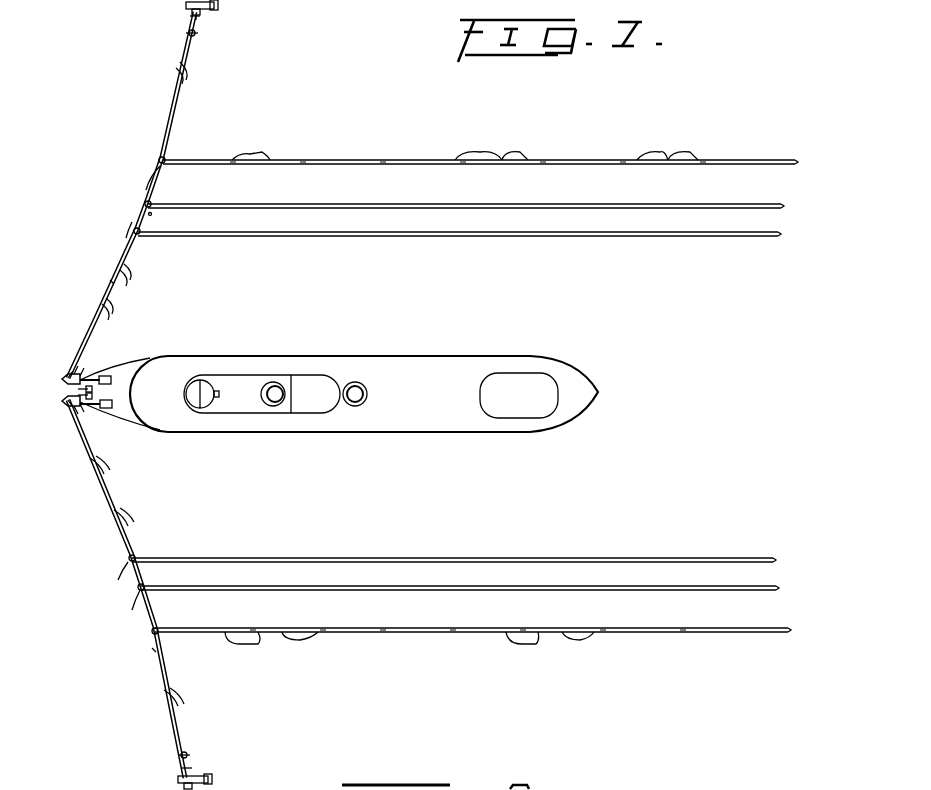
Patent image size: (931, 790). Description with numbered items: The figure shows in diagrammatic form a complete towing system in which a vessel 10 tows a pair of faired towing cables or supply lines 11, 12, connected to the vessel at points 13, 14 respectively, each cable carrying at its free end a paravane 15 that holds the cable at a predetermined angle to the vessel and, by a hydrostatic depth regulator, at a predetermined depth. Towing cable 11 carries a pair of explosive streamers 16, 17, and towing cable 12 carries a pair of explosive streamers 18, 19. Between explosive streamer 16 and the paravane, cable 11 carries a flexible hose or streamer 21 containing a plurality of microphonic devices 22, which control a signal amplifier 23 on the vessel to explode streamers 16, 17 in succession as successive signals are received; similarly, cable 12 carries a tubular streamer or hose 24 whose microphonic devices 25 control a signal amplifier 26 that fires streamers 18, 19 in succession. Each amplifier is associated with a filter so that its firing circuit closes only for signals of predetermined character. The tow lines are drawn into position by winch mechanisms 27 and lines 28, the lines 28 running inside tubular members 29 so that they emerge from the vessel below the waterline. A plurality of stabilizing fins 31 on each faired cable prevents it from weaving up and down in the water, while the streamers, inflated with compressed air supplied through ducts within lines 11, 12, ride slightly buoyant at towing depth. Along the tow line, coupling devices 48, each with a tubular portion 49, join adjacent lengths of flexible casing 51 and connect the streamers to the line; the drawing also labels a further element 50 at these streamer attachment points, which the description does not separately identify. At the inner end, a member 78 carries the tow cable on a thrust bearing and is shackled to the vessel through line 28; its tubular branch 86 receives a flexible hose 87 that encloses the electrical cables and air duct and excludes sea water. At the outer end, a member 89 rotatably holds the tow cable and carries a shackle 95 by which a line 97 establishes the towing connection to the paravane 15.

The vessel 10 is at (364, 394).
The faired towing cable 11 is at (164, 118).
The faired towing cable 12 is at (163, 664).
The connection point 13 is at (66, 376).
The connection point 14 is at (68, 404).
The paravane 15 is at (208, 8).
The explosive streamer 16 is at (362, 200).
The explosive streamer 17 is at (346, 238).
The explosive streamer 18 is at (370, 590).
The explosive streamer 19 is at (378, 560).
The flexible hose or streamer 21 is at (320, 158).
The microphonic devices 22 is at (465, 145).
The signal amplifier 23 is at (111, 379).
The tubular streamer or hose 24 is at (366, 632).
The microphonic devices 25 is at (409, 643).
The signal amplifier 26 is at (112, 404).
The winch mechanism 27 is at (92, 396).
The line 28 is at (64, 379).
The tubular member 29 is at (80, 378).
The stabilizing fins 31 is at (185, 76).
The coupling device 48 is at (163, 158).
The tubular portion 49 is at (156, 172).
The rib pivots 50 is at (154, 200).
The flexible casing 51 is at (112, 282).
The member 78 is at (72, 372).
The tubular branch 86 is at (82, 372).
The flexible hose 87 is at (86, 378).
The member 89 is at (195, 33).
The shackle 95 is at (189, 33).
The line 97 is at (192, 16).